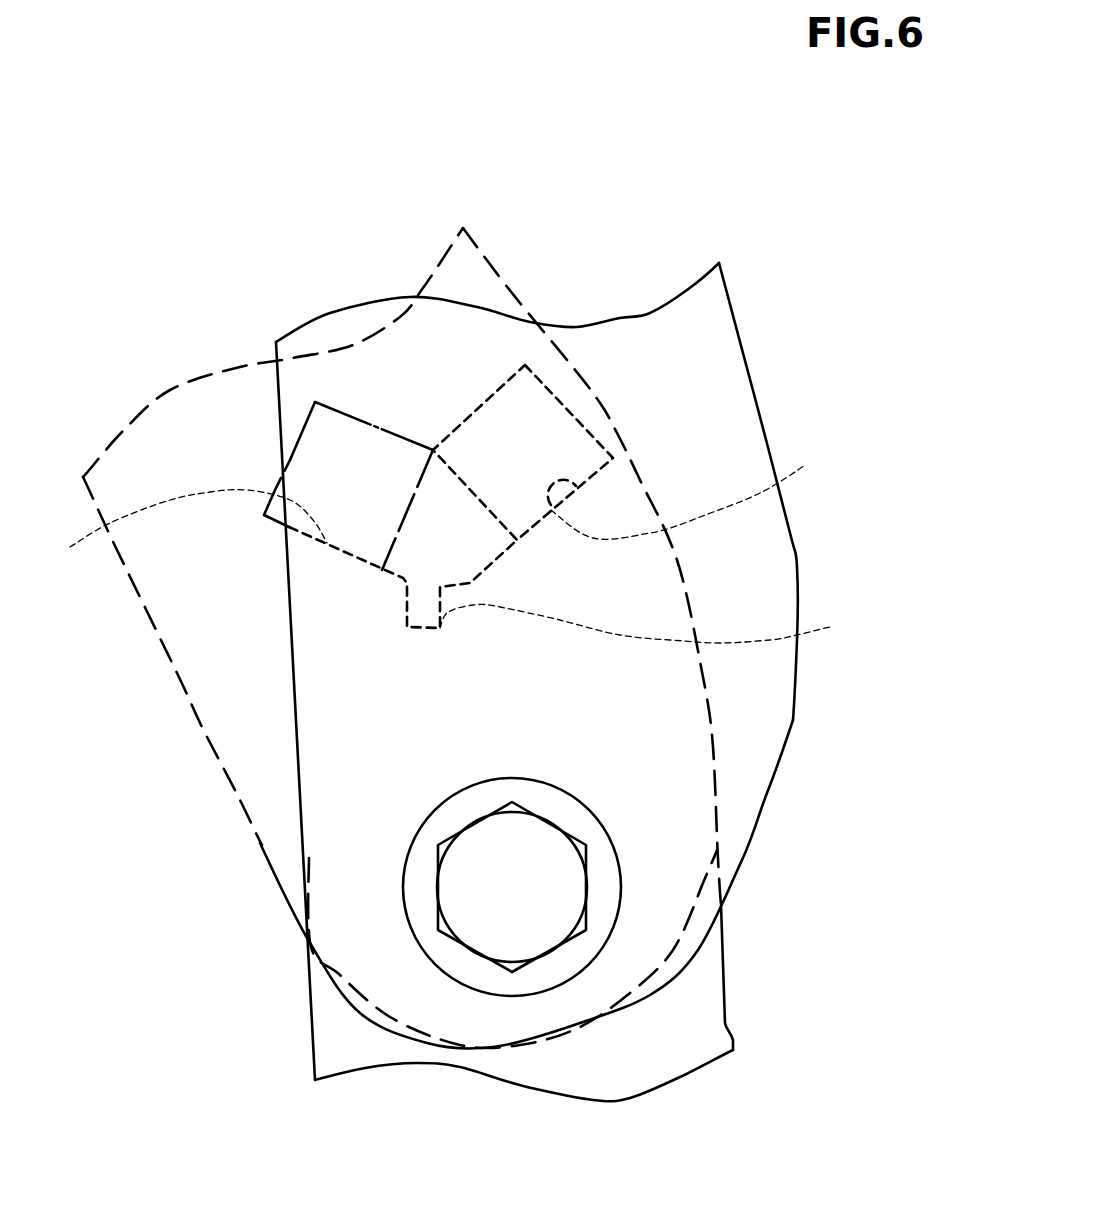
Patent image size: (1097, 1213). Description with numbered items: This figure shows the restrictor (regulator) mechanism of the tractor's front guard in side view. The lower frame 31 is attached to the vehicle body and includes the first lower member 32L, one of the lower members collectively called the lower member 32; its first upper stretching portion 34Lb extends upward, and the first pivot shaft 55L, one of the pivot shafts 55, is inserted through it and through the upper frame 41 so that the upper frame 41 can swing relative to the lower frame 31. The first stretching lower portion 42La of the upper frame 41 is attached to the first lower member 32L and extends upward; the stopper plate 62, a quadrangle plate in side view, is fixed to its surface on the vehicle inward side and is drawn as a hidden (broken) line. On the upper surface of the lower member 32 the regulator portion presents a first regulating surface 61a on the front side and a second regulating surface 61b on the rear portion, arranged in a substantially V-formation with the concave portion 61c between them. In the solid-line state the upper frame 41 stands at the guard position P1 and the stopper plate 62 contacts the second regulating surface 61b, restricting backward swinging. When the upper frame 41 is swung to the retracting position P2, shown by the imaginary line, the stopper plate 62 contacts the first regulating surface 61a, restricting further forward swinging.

The lower frame 31 is at (485, 748).
The first lower member 32L is at (204, 711).
The lower member 32 is at (310, 995).
The first upper stretching portion 34Lb is at (725, 993).
The upper frame 41 is at (483, 616).
The first stretching lower portion 42La is at (792, 534).
The first pivot shaft 55L is at (647, 887).
The pivot shaft 55 is at (527, 895).
The first regulating surface 61a is at (167, 527).
The second regulating surface 61b is at (708, 491).
The concave portion 61c is at (664, 625).
The stopper plate 62 is at (493, 393).
The guard position P1 is at (678, 288).
The retracting position P2 is at (112, 436).